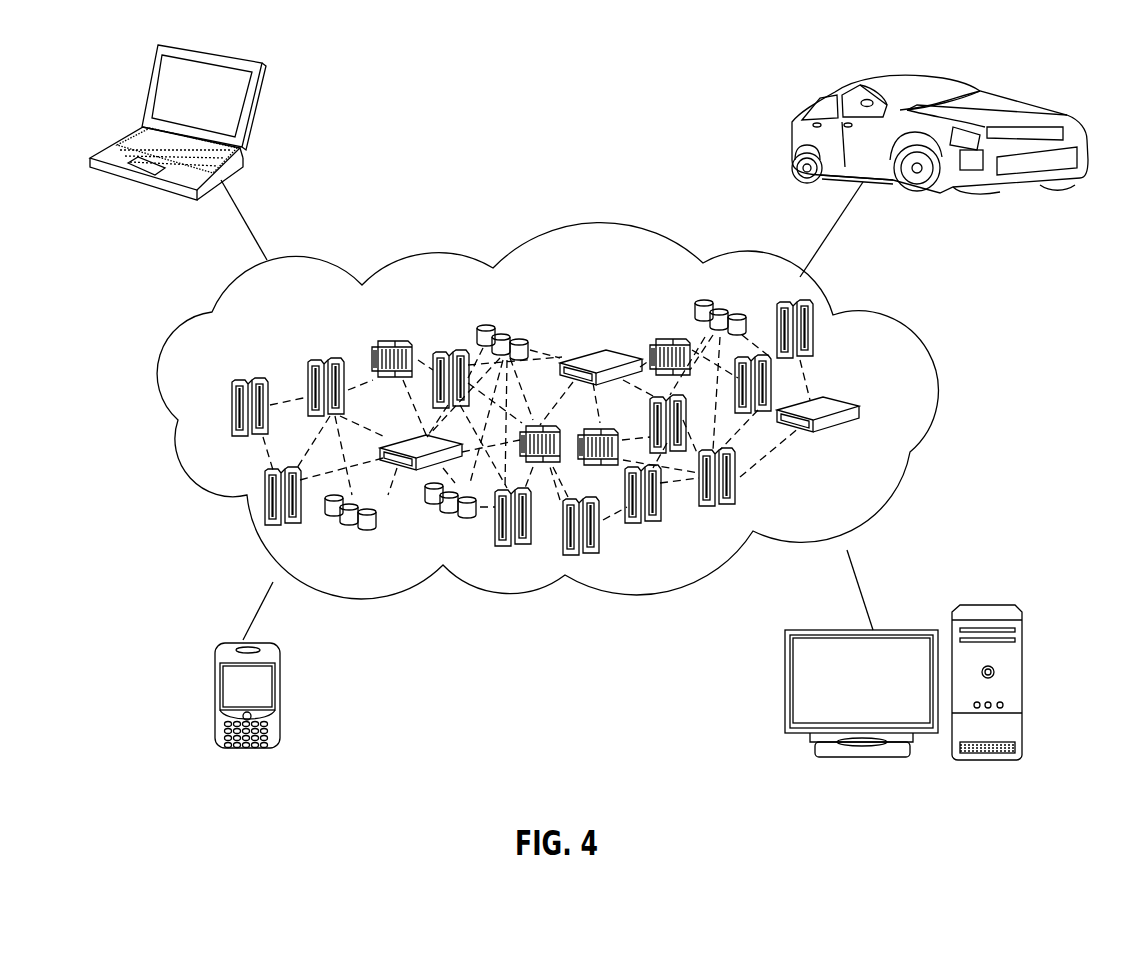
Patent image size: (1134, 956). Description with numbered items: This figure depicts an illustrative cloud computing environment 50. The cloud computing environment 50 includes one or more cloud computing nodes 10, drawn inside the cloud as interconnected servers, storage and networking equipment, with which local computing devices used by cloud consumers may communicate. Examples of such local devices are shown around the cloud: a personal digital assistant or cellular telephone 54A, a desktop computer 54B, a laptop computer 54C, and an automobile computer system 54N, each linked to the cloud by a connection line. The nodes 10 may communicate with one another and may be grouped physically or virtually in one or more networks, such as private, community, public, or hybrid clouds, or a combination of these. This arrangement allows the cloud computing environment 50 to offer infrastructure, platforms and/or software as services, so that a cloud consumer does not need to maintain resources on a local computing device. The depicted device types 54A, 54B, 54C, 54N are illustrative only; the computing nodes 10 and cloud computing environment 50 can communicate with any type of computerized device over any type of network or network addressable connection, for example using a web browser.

The cloud computing node 10 is at (895, 409).
The cloud computing environment 50 is at (917, 327).
The personal digital assistant (PDA) or cellular telephone 54A is at (218, 698).
The desktop computer 54B is at (992, 603).
The laptop computer 54C is at (253, 112).
The automobile computer system 54N is at (795, 120).